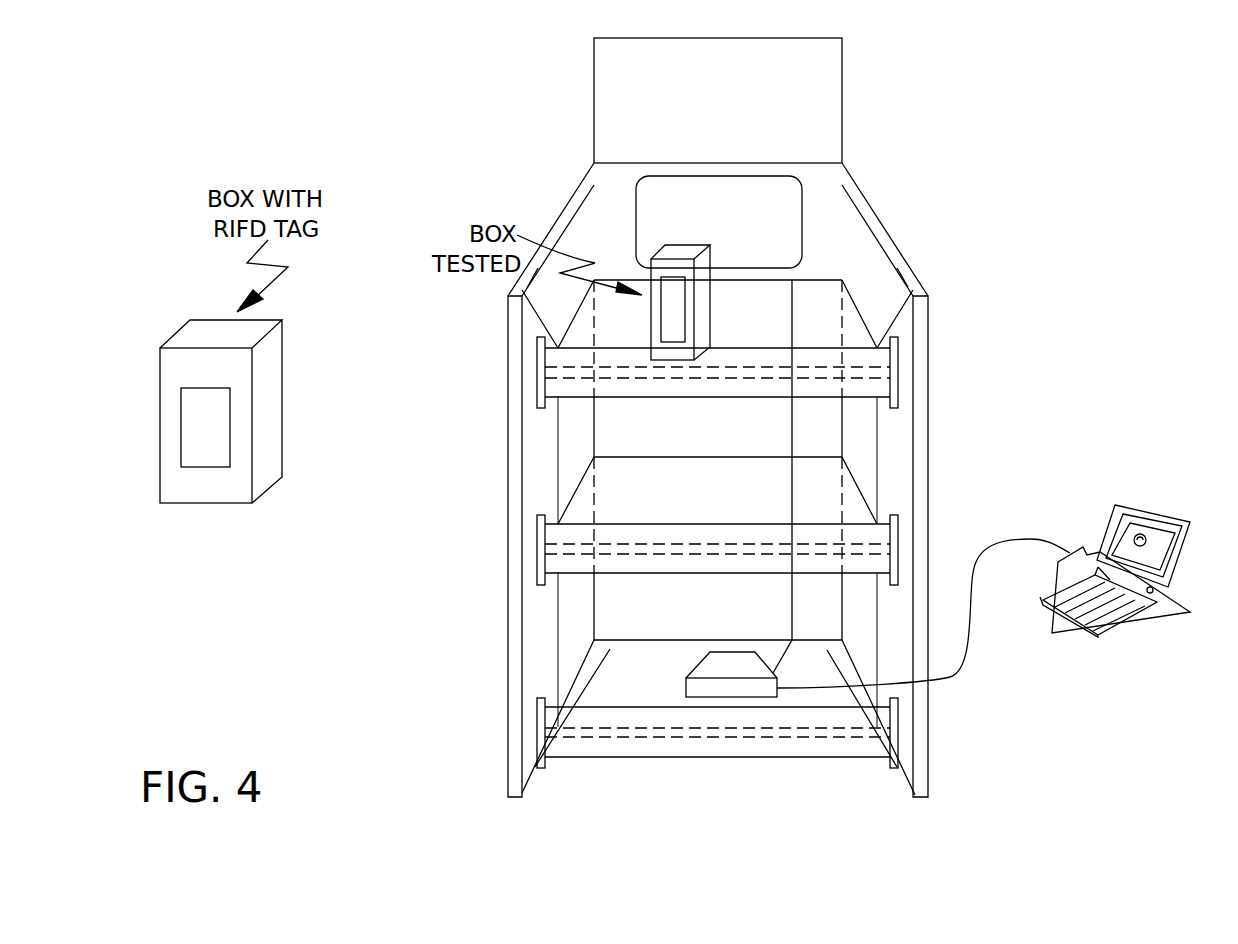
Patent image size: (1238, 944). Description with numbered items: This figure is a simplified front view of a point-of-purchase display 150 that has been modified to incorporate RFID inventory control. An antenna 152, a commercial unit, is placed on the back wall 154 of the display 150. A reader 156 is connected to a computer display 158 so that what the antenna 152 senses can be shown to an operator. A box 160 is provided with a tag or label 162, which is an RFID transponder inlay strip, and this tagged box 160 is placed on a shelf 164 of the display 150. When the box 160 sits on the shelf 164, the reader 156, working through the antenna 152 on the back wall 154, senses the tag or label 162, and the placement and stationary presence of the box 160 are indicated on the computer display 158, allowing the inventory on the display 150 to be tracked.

The POP display 150 is at (487, 132).
The antenna 152 is at (812, 221).
The back wall 154 is at (612, 183).
The reader 156 is at (687, 687).
The computer display 158 is at (1075, 633).
The box 160 is at (192, 372).
The tag or label 162 is at (205, 432).
The shelf 164 is at (602, 332).